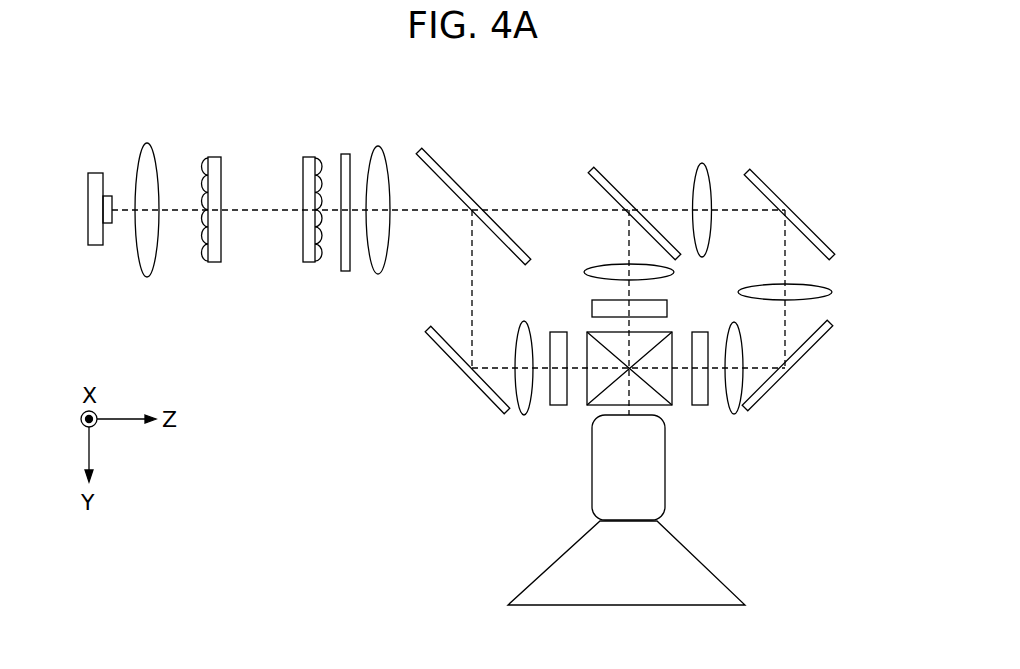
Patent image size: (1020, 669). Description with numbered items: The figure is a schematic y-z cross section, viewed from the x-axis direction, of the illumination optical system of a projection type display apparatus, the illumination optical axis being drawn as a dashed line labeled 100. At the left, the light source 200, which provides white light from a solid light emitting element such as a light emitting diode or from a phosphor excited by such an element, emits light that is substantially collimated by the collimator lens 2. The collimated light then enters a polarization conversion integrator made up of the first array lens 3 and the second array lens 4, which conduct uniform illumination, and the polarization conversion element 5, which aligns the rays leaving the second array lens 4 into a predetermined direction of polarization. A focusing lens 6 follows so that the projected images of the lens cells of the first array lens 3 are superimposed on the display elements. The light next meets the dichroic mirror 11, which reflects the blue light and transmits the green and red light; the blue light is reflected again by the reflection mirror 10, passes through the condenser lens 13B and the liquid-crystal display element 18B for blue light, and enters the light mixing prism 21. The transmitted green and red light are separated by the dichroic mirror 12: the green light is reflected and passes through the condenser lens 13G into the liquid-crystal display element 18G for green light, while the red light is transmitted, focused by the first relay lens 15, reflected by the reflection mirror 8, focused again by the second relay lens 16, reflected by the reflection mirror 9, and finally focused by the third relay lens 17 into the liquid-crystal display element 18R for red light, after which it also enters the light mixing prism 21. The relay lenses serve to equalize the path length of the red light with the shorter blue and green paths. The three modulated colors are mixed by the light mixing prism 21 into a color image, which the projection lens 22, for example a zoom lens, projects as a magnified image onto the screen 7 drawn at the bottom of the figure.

The illumination device 100 is at (272, 205).
The light source 200 is at (98, 172).
The collimator lens 2 is at (148, 143).
The first array lens 3 is at (212, 157).
The second array lens 4 is at (307, 157).
The polarization conversion element 5 is at (345, 154).
The focusing lens 6 is at (378, 146).
The dichroic mirror 11 is at (438, 162).
The dichroic mirror 12 is at (616, 177).
The condenser lens 13G is at (602, 264).
The first relay lens 15 is at (700, 164).
The reflection mirror 8 is at (770, 178).
The second relay lens 16 is at (832, 292).
The liquid-crystal display element for R-light 18R is at (704, 332).
The liquid-crystal display element for G-light 18G is at (592, 303).
The third relay lens 17 is at (742, 350).
The reflection mirror 9 is at (812, 352).
The reflection mirror 10 is at (440, 357).
The condenser lens 13B is at (522, 416).
The liquid-crystal display element for B-light 18B is at (557, 406).
The light mixing prism 21 is at (673, 407).
The projection lens 22 is at (666, 473).
The screen 7 is at (715, 570).